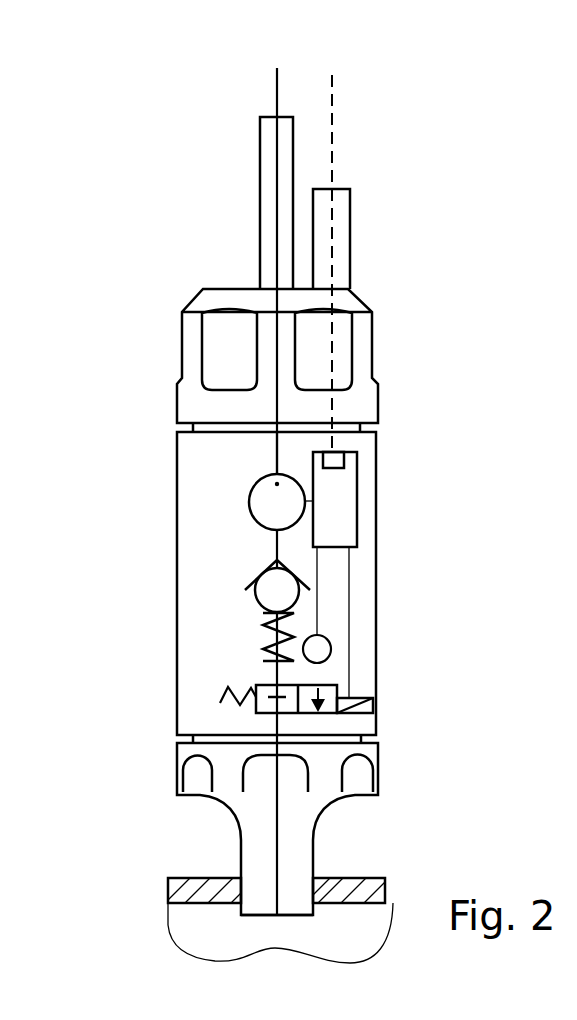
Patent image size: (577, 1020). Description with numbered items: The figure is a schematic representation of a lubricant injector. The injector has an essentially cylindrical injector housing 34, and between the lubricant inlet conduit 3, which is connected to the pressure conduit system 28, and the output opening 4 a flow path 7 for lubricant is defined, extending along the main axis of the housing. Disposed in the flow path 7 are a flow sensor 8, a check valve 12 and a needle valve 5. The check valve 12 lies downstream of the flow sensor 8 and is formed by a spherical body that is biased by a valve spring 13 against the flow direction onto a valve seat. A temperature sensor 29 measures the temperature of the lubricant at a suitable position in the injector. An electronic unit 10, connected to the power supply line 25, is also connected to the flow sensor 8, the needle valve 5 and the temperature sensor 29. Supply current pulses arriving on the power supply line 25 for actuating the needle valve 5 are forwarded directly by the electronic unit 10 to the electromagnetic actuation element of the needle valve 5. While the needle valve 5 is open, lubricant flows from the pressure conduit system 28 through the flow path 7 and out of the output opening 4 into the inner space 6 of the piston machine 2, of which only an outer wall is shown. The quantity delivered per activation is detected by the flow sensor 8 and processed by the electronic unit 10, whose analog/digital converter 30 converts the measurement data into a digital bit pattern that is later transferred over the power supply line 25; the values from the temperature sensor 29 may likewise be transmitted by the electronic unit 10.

The piston machine 2 is at (200, 893).
The lubricant inlet conduit 3 is at (260, 203).
The output opening 4 is at (275, 915).
The needle valve 5 is at (373, 710).
The inner space 6 is at (369, 945).
The flow path 7 is at (275, 447).
The flow sensor 8 is at (249, 507).
The electronic unit 10 is at (337, 507).
The check valve 12 is at (255, 598).
The valve spring 13 is at (265, 652).
The power supply line 25 is at (332, 145).
The pressure conduit system 28 is at (277, 83).
The temperature sensor 29 is at (331, 649).
The analog/digital converter 30 is at (343, 458).
The injector housing 34 is at (220, 555).